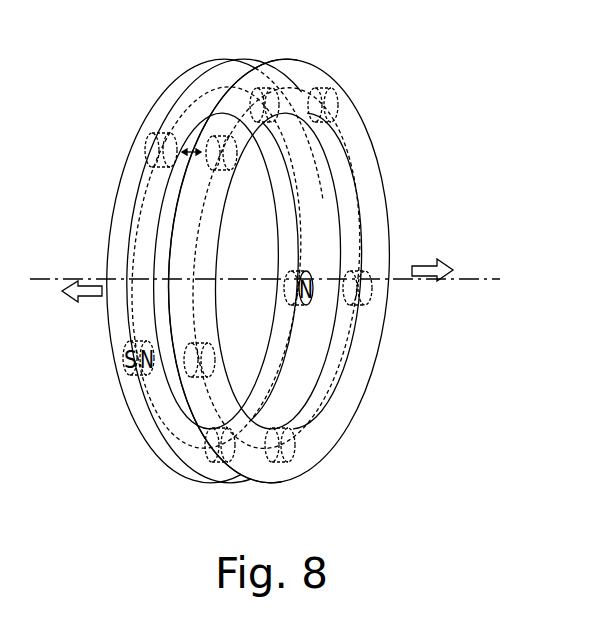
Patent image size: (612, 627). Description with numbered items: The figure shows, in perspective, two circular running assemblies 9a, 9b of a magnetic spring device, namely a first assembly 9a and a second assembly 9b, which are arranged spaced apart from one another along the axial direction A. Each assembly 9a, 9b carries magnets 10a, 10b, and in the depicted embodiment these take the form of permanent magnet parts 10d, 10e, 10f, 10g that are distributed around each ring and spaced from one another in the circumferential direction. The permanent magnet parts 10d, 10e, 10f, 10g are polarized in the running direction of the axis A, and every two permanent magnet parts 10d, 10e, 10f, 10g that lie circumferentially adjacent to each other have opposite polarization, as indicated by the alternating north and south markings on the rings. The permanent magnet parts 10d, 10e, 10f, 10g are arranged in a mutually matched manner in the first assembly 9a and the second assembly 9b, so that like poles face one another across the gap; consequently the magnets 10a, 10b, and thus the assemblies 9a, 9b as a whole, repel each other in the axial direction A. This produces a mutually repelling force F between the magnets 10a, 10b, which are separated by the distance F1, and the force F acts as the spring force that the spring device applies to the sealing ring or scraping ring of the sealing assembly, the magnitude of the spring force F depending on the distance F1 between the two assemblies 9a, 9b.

The first assembly 9a is at (152, 450).
The second assembly 9b is at (352, 388).
The magnet 10a is at (157, 140).
The magnet 10b is at (226, 165).
The permanent magnet part 10d is at (332, 115).
The permanent magnet part 10e is at (372, 292).
The permanent magnet part 10f is at (287, 452).
The permanent magnet part 10g is at (195, 378).
The repelling force F is at (420, 262).
The distance F1 is at (197, 140).
The axial direction A is at (483, 278).